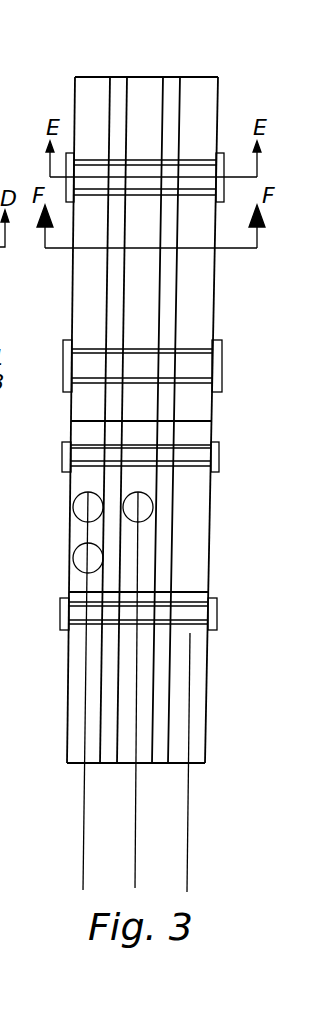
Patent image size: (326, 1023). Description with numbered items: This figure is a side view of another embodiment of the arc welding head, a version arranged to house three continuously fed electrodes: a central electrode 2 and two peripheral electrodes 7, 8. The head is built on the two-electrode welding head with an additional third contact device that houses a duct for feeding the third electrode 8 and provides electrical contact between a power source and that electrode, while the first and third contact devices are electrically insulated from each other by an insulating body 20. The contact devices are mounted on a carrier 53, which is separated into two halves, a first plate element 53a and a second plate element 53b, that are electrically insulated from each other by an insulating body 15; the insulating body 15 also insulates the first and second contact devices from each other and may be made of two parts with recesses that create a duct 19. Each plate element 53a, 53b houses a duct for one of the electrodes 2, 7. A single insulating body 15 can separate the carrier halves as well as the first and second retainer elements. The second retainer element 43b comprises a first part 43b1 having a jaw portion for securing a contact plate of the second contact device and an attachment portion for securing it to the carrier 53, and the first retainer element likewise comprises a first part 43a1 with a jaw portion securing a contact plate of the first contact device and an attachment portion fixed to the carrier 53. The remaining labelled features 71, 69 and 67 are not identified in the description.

The insulating body 15 is at (172, 85).
The insulating body 20 is at (122, 80).
The inner rail 71 is at (90, 87).
The first plate element 53a is at (138, 115).
The second plate element 53b is at (198, 100).
The carrier 53 is at (45, 91).
The second retainer element 43b is at (37, 169).
The lower body portion 69 is at (85, 670).
The duct 19 is at (72, 738).
The lower corner 67 is at (73, 766).
The first part of first retainer element 43a1 is at (126, 766).
The first part of second retainer element 43b1 is at (193, 766).
The third electrode 8 is at (83, 866).
The central electrode 2 is at (135, 858).
The second electrode 7 is at (190, 868).